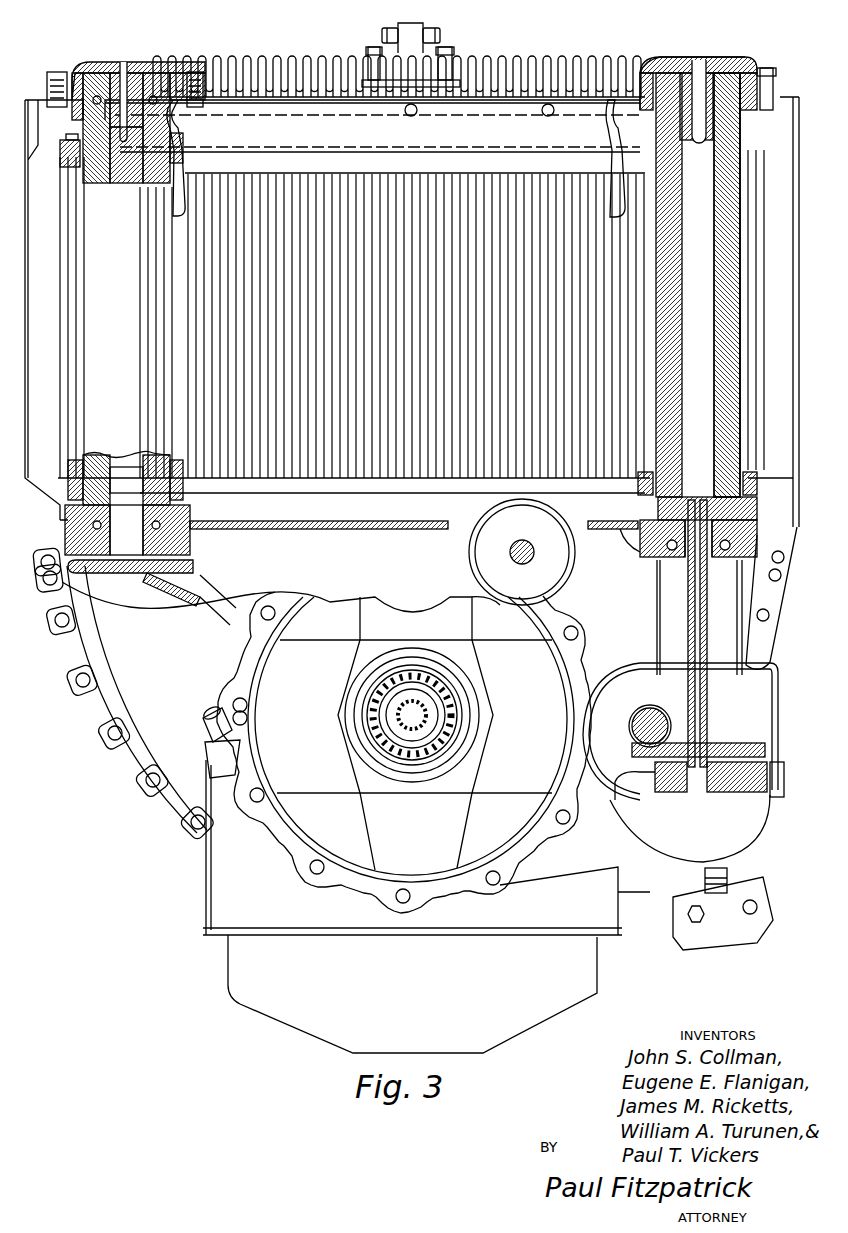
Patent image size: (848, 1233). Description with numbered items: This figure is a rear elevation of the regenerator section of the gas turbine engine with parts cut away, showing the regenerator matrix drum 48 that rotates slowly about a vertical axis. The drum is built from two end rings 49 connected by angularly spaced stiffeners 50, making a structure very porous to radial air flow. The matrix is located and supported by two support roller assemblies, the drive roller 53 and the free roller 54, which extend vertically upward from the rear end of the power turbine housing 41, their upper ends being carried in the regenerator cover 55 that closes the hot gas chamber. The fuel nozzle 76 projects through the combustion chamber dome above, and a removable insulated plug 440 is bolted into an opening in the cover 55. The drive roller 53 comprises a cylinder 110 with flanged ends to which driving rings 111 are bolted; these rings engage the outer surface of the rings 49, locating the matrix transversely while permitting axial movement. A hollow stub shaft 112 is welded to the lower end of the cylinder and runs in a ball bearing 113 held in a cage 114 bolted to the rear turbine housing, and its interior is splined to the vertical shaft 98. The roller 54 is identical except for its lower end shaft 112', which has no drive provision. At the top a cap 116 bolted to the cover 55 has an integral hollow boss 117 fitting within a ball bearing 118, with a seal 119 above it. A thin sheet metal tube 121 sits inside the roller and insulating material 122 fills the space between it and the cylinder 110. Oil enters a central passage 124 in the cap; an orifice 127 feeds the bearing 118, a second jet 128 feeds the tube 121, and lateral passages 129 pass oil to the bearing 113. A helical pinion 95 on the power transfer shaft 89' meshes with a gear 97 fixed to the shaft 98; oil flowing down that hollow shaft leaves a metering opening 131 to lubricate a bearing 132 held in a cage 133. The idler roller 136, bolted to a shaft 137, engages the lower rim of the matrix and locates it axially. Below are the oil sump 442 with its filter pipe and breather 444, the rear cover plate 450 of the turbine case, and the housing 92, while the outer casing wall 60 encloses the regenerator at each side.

The power turbine housing 41 is at (133, 685).
The matrix drum 48 is at (770, 176).
The end rings 49 is at (60, 148).
The stiffeners 50 is at (445, 356).
The drive roller 53 is at (751, 316).
The support roller 54 is at (93, 412).
The regenerator cover 55 is at (535, 56).
The shroud casing 60 is at (32, 130).
The fuel nozzle 76 is at (410, 38).
The power transfer shaft 89' is at (634, 722).
The water pump housing 92 is at (745, 832).
The helical pinion 95 is at (660, 700).
The gear 97 is at (735, 743).
The vertical shaft 98 is at (705, 710).
The cylinder 110 is at (742, 222).
The driving rings 111 is at (185, 145).
The hollow stub shaft 112 is at (707, 486).
The lower end shaft 112' is at (127, 489).
The ball bearing 113 is at (160, 584).
The cage 114 is at (170, 526).
The cap 116 is at (85, 68).
The hollow boss 117 is at (714, 62).
The ball bearing 118 is at (168, 116).
The seal 119 is at (735, 58).
The sheet metal tube 121 is at (120, 192).
The insulating material 122 is at (728, 447).
The central passage 124 is at (125, 62).
The orifice 127 is at (110, 128).
The second jet 128 is at (130, 186).
The lateral passages 129 is at (124, 574).
The metering opening 131 is at (672, 792).
The bearing 132 is at (733, 792).
The cage 133 is at (777, 782).
The roller 136 is at (485, 552).
The shaft 137 is at (522, 540).
The removable plug 440 is at (462, 78).
The oil sump 442 is at (255, 960).
The filter pipe and breather 444 is at (212, 706).
The rear cover plate 450 is at (315, 818).